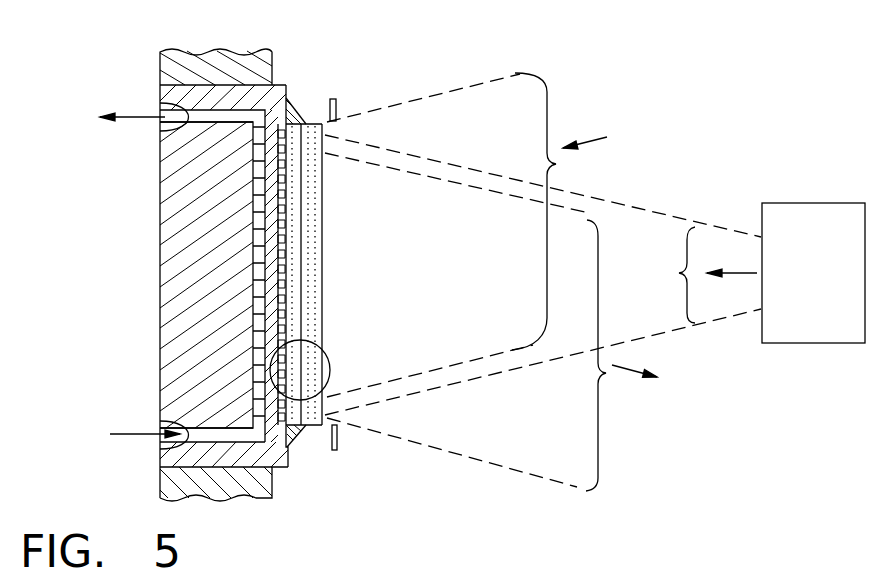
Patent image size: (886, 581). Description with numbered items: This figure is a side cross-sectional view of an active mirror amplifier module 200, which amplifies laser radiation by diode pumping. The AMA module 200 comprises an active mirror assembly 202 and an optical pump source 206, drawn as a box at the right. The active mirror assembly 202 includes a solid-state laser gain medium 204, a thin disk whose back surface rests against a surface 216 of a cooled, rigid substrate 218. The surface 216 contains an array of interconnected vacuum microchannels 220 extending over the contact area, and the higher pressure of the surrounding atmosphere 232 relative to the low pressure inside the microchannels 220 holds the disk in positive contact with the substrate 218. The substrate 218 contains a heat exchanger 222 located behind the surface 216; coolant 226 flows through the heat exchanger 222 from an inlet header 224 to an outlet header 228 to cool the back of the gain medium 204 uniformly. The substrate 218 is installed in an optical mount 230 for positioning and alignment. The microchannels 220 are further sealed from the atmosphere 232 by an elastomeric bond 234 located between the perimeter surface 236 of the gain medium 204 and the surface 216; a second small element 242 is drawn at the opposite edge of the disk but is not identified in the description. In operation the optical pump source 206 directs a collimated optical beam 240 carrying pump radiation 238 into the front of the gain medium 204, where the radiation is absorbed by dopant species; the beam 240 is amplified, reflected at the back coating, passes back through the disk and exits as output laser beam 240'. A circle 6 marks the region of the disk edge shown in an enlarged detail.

The AMA module 200 is at (688, 64).
The active mirror assembly 202 is at (402, 82).
The laser gain medium 204 is at (297, 220).
The optical pump source 206 is at (812, 203).
The surface of the substrate 216 is at (304, 122).
The rigid substrate 218 is at (190, 206).
The vacuum microchannels 220 is at (288, 272).
The heat exchanger 222 is at (256, 168).
The inlet header 224 is at (172, 443).
The coolant 226 is at (130, 432).
The outlet header 228 is at (160, 99).
The optical mount 230 is at (160, 66).
The atmosphere 232 is at (610, 63).
The elastomeric bond 234 is at (300, 427).
The perimeter surface 236 is at (312, 121).
The pump radiation 238 is at (679, 272).
The collimated optical beam 240 is at (610, 161).
The output laser beam 240' is at (651, 355).
The lower beam stop 242 is at (338, 434).
The detail region of FIG. 6 is at (328, 353).